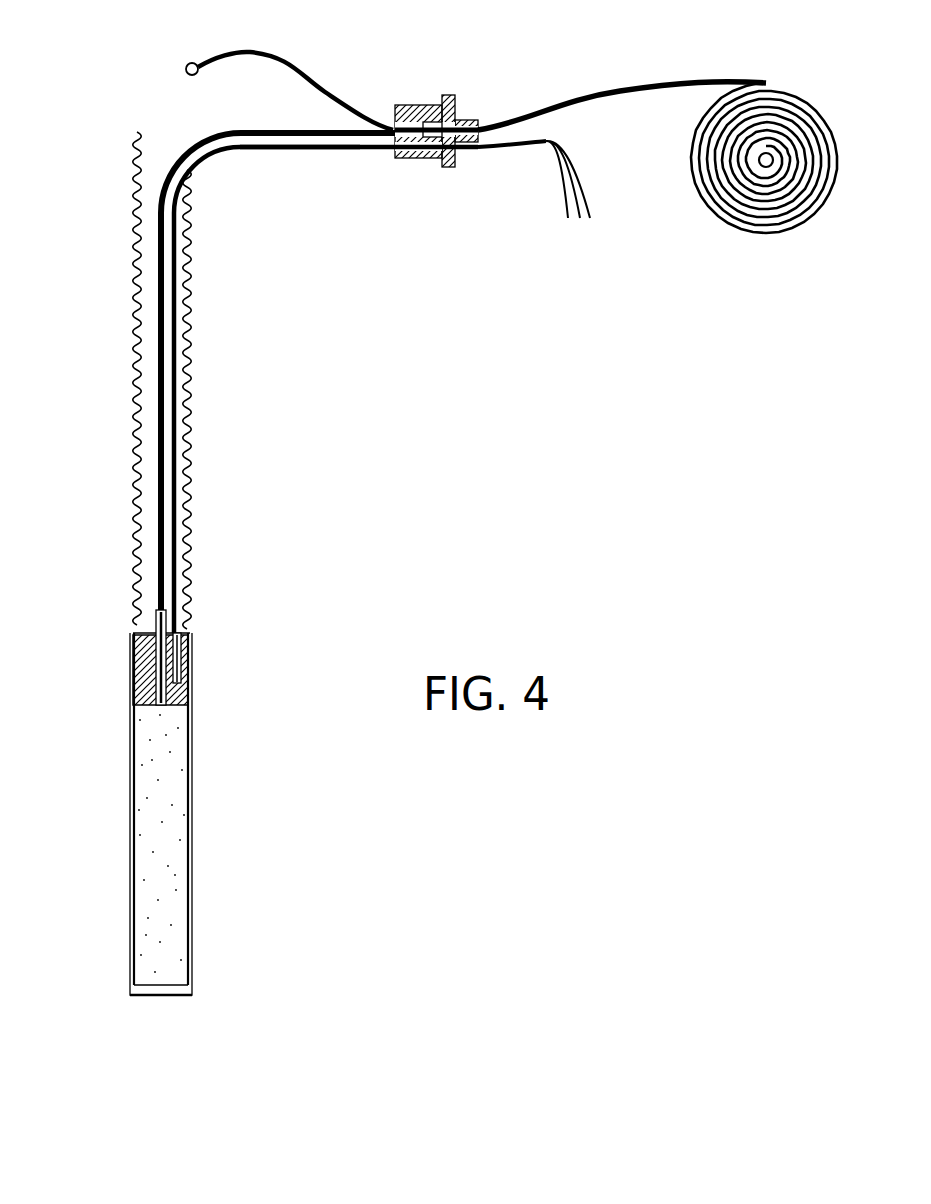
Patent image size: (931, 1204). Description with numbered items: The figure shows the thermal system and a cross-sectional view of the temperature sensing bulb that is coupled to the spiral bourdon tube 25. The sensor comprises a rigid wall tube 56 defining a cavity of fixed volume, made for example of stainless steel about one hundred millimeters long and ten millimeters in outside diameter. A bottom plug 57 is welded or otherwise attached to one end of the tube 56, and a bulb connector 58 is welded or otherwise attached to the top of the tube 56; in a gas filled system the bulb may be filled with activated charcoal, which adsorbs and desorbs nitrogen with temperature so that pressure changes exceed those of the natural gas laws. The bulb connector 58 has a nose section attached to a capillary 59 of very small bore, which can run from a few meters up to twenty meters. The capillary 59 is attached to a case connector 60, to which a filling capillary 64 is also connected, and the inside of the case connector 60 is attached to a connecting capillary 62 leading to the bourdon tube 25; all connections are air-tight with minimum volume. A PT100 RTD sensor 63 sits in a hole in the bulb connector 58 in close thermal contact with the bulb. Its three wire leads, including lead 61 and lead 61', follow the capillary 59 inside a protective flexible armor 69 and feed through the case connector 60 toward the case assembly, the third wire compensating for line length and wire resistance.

The bourdon tube 25 is at (760, 236).
The rigid wall tube 56 is at (192, 833).
The bottom plug 57 is at (166, 995).
The bulb connector 58 is at (140, 663).
The capillary 59 is at (232, 131).
The case connector 60 is at (421, 103).
The wire lead 61 is at (284, 390).
The wire lead 61' is at (280, 180).
The connecting capillary 62 is at (568, 105).
The RTD sensor 63 is at (177, 655).
The filling capillary 64 is at (283, 58).
The flexible armor 69 is at (134, 377).